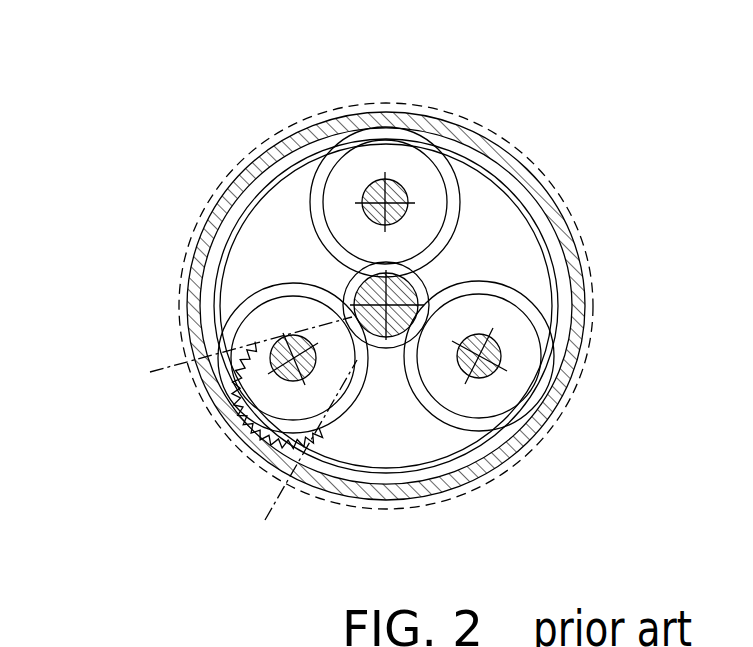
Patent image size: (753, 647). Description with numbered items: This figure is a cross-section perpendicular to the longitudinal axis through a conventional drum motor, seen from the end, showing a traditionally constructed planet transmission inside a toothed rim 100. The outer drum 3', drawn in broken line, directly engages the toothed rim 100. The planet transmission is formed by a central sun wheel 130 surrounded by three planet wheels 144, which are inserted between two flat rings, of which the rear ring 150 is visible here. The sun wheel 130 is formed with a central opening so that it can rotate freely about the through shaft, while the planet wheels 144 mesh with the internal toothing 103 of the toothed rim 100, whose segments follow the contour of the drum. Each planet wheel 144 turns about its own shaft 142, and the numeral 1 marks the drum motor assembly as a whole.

The drive apparatus 1 is at (195, 135).
The toothed rim 100 is at (174, 642).
The drum 3' is at (425, 306).
The sun wheel 130 is at (405, 291).
The roller shaft 142 is at (397, 190).
The planet wheels 144 is at (355, 165).
The internal toothing 103 is at (282, 445).
The rear ring 150 is at (380, 430).